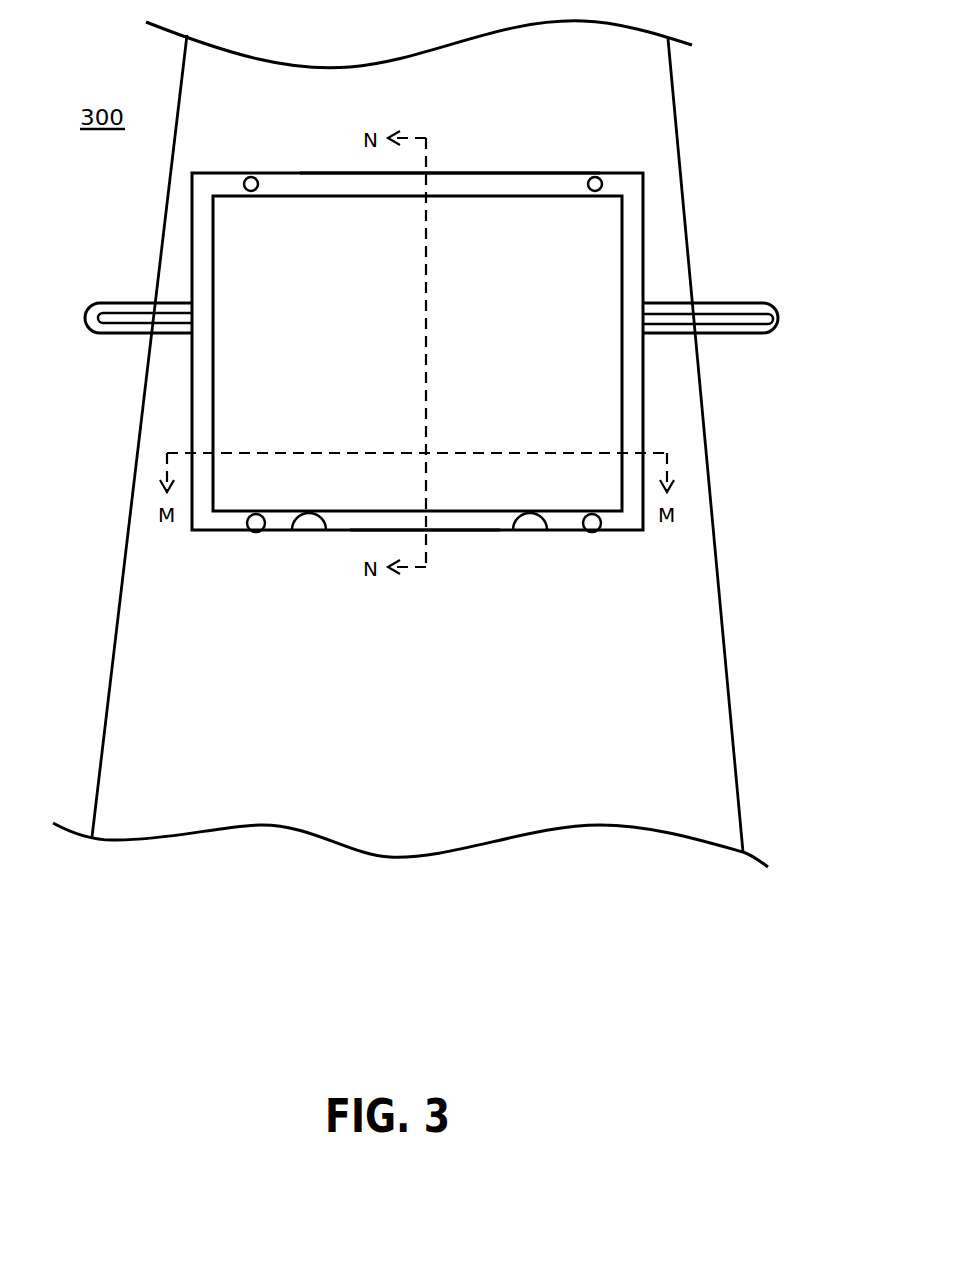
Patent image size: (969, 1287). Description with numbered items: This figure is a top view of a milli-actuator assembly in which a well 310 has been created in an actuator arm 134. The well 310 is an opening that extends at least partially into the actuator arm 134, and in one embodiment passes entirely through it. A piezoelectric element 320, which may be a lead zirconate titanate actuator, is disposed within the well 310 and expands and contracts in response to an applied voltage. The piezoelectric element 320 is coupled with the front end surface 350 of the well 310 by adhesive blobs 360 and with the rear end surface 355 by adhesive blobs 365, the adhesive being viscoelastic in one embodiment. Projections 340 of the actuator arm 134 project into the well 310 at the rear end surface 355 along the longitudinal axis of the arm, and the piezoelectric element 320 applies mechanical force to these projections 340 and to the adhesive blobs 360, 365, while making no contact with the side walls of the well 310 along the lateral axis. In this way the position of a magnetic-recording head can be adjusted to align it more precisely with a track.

The actuator arm 134 is at (654, 90).
The well 310 is at (633, 258).
The piezoelectric element 320 is at (258, 383).
The projections 340 is at (310, 528).
The front end surface 350 is at (457, 173).
The rear end surface 355 is at (455, 533).
The adhesive blobs 360 is at (251, 177).
The adhesive blobs 365 is at (258, 531).